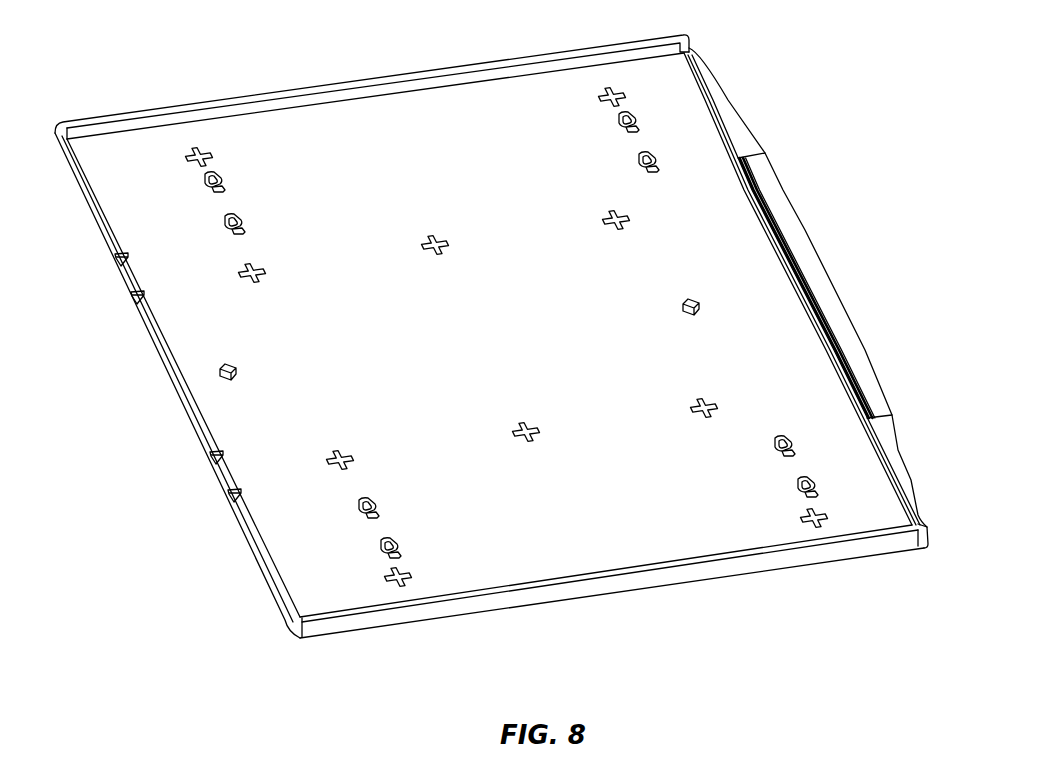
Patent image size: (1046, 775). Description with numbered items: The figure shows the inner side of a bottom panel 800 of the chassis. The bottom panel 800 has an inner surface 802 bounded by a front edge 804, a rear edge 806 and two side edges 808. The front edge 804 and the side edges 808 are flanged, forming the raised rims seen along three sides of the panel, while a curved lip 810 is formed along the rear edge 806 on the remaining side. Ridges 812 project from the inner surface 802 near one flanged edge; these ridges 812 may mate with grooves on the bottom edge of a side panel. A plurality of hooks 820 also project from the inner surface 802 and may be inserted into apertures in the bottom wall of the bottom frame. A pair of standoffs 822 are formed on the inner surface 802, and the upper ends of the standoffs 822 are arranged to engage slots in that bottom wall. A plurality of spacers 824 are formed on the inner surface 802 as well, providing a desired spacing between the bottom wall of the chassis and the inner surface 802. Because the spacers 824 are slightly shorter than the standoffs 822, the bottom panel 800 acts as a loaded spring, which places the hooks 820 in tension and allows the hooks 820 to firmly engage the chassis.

The bottom panel 800 is at (378, 38).
The inner surface 802 is at (672, 90).
The front edge 804 is at (205, 446).
The rear edge 806 is at (753, 212).
The side edges 808 is at (172, 102).
The curved lip 810 is at (830, 274).
The ridges 812 is at (115, 255).
The hooks 820 is at (392, 540).
The standoffs 822 is at (228, 363).
The spacers 824 is at (255, 264).